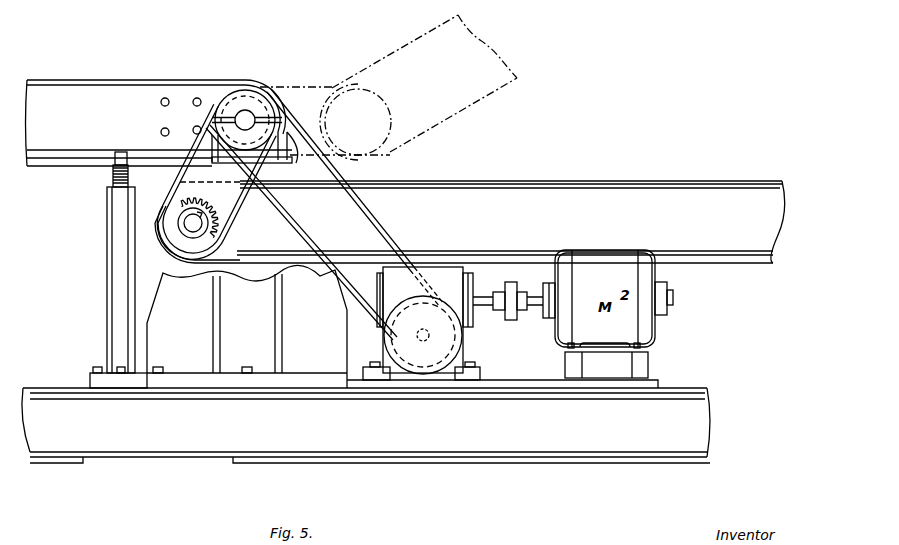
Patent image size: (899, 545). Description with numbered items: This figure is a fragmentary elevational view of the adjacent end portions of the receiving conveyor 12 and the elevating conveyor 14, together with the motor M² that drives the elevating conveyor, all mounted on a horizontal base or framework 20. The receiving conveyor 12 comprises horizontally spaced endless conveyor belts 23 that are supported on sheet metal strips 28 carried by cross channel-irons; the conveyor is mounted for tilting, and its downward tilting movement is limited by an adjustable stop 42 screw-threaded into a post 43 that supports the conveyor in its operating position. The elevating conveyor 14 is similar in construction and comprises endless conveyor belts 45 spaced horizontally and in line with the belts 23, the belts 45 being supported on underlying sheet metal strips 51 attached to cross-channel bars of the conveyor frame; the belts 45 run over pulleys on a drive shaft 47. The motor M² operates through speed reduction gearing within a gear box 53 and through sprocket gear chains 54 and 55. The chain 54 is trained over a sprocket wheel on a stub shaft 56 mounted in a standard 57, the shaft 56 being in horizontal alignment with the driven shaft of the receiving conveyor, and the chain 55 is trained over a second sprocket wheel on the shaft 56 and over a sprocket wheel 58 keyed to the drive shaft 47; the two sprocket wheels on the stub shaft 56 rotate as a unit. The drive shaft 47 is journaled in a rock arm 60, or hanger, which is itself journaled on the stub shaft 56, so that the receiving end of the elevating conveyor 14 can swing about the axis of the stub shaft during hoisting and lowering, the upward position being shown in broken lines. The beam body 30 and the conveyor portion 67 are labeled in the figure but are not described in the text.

The receiving conveyor 12 is at (105, 56).
The endless conveyor belts 23 is at (151, 57).
The beam 30 is at (84, 120).
The sheet metal strips 28 is at (160, 87).
The adjustable stop 42 is at (124, 151).
The post 43 is at (118, 226).
The drive shaft 47 is at (193, 223).
The sprocket wheel 58 is at (228, 172).
The rock arm 60 is at (212, 203).
The sprocket gear chain 55 is at (240, 216).
The stub shaft 56 is at (247, 118).
The sprocket gear chain 54 is at (380, 237).
The gear box 53 is at (441, 275).
The standard 57 is at (198, 338).
The elevating conveyor 14 is at (568, 180).
The sheet metal strips 51 is at (528, 186).
The endless conveyor belts 45 is at (636, 160).
The conveyor body 67 is at (608, 216).
The horizontal base or framework 20 is at (684, 403).